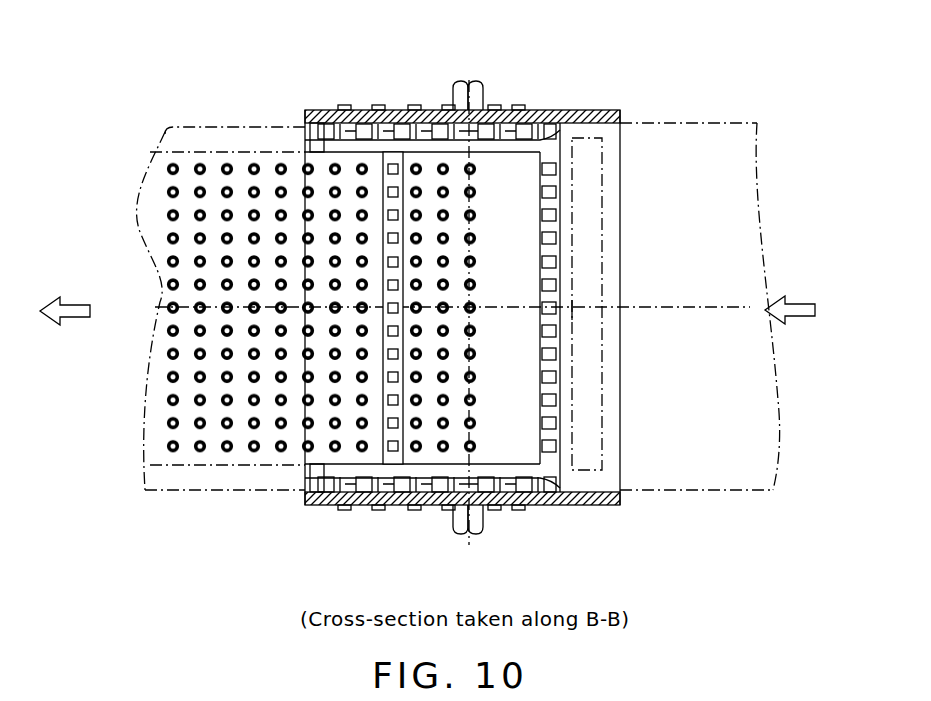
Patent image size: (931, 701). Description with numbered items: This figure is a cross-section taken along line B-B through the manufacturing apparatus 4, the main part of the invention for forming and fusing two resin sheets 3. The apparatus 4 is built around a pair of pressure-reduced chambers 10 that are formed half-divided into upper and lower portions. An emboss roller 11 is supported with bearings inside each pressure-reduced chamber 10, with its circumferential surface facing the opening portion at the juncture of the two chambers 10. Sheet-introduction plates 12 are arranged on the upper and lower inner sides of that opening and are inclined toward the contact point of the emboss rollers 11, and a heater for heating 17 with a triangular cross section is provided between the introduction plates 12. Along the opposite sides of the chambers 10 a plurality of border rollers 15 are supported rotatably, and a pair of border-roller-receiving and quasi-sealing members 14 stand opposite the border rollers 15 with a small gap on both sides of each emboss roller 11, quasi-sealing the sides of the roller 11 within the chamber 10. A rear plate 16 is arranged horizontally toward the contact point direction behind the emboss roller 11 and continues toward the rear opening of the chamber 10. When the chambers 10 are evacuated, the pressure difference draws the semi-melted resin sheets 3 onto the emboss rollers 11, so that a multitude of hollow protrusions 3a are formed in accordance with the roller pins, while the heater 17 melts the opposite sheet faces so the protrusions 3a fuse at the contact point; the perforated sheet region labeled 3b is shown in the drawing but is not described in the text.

The resin sheet 3 is at (730, 377).
The hollow protrusion 3a is at (172, 424).
The perforated plate 3b is at (242, 148).
The manufacturing apparatus 4 is at (762, 54).
The pressure-reduced chamber 10 is at (600, 112).
The emboss roller 11 is at (510, 193).
The sheet-introduction plate 12 is at (615, 290).
The border-roller-receiving and quasi-sealing member 14 is at (333, 112).
The border roller 15 is at (399, 108).
The rear plate 16 is at (328, 432).
The heater for heating 17 is at (600, 390).